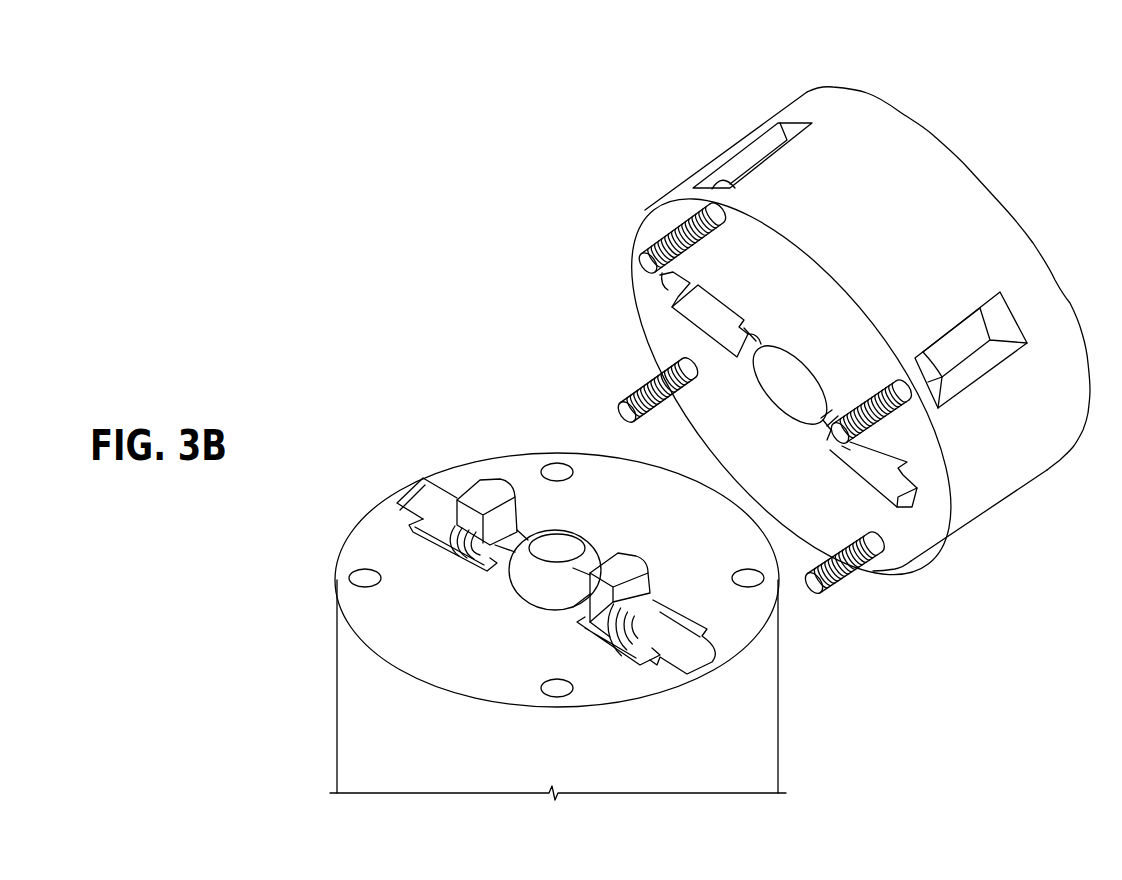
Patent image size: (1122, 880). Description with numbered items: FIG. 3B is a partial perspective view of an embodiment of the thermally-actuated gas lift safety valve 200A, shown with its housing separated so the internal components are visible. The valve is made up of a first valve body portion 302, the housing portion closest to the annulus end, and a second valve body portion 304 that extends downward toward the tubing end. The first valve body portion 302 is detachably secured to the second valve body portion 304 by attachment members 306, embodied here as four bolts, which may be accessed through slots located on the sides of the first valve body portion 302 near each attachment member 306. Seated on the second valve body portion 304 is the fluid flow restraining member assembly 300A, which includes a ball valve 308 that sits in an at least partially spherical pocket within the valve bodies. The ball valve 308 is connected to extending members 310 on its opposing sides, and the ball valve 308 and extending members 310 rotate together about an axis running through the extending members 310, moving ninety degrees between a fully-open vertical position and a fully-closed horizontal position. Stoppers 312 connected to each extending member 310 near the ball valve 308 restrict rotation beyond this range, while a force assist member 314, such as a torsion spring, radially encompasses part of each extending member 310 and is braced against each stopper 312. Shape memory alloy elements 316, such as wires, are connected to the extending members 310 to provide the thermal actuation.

The thermally-actuated gas lift safety valve 200A is at (539, 236).
The fluid flow restraining member assembly 300A is at (497, 443).
The first valve body portion 302 is at (777, 137).
The second valve body portion 304 is at (778, 738).
The attachment member 306 is at (640, 245).
The ball valve 308 is at (574, 530).
The extending member 310 is at (420, 478).
The stopper 312 is at (482, 490).
The force assist member 314 is at (665, 600).
The shape memory alloy element 316 is at (655, 645).